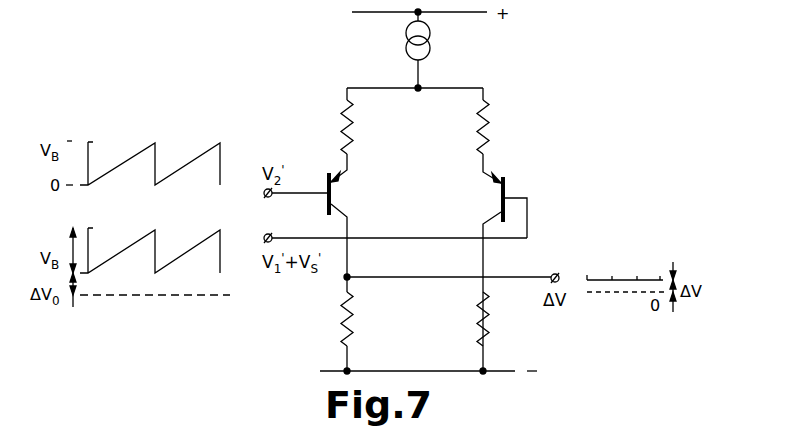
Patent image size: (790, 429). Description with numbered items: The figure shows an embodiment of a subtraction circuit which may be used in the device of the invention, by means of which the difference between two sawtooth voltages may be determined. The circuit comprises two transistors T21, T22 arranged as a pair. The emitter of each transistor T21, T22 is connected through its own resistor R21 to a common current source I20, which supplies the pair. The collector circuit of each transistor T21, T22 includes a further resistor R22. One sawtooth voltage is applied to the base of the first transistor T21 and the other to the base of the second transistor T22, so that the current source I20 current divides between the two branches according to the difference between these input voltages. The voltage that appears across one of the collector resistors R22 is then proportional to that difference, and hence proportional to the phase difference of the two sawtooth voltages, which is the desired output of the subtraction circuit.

The current source I20 is at (438, 28).
The resistor R21 is at (353, 121).
The resistor R22 is at (477, 316).
The transistor T21 is at (340, 193).
The transistor T22 is at (494, 198).